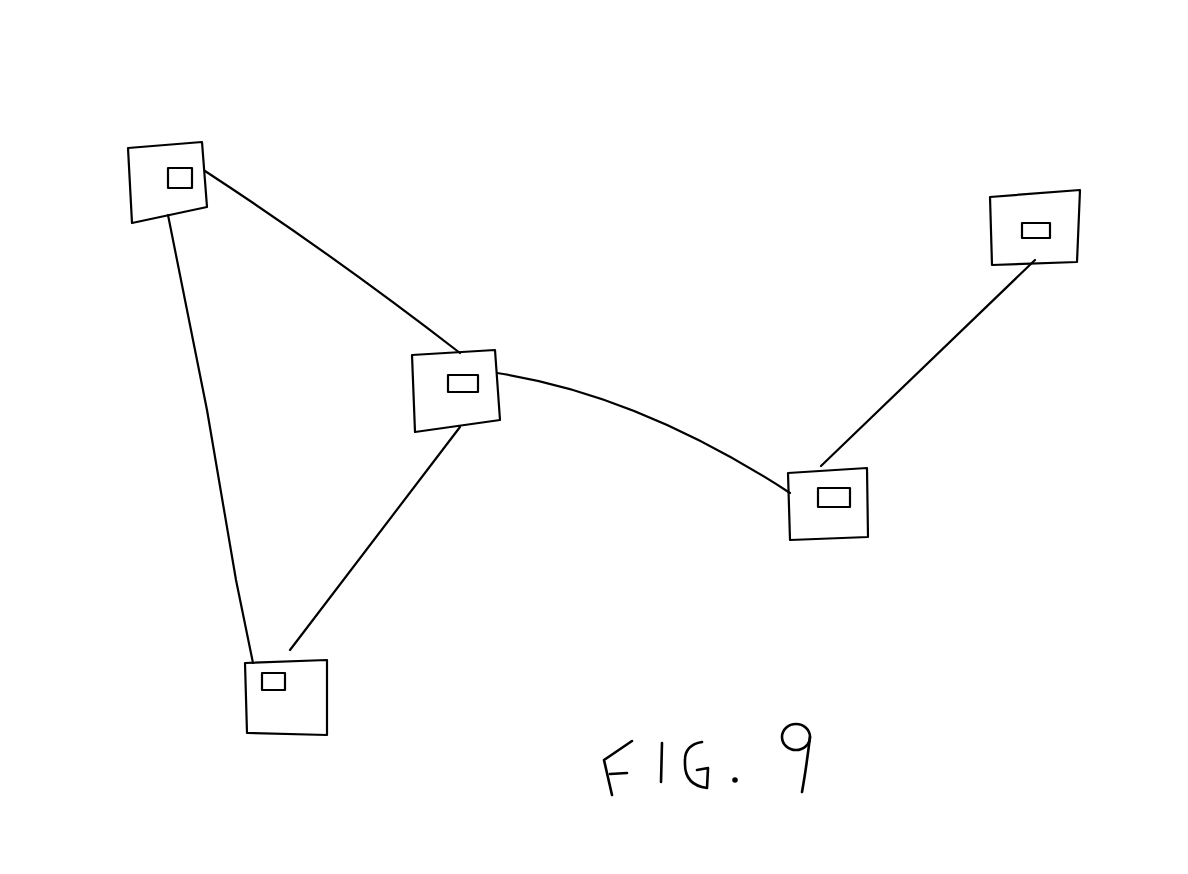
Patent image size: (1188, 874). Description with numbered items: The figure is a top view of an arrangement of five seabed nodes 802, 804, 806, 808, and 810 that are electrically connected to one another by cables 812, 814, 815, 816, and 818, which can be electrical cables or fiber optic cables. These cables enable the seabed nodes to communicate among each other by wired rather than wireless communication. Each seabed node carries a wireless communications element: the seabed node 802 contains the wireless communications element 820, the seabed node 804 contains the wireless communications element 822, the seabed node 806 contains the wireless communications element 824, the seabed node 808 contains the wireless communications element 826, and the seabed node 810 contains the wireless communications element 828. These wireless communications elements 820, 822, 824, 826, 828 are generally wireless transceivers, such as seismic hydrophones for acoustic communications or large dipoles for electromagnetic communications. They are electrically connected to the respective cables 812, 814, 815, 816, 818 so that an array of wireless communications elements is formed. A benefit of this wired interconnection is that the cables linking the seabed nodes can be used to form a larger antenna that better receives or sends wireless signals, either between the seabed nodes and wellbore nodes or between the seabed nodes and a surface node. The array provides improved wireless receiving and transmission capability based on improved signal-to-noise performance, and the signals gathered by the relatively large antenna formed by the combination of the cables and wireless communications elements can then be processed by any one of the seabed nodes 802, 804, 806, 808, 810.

The seabed node 802 is at (157, 153).
The seabed node 804 is at (273, 717).
The seabed node 806 is at (468, 362).
The seabed node 808 is at (840, 527).
The seabed node 810 is at (1040, 202).
The cable 812 is at (197, 373).
The cable 814 is at (335, 259).
The cable 815 is at (377, 538).
The cable 816 is at (608, 398).
The cable 818 is at (940, 367).
The wireless communications element 820 is at (197, 167).
The wireless communications element 822 is at (285, 680).
The wireless communications element 824 is at (468, 390).
The wireless communications element 826 is at (850, 492).
The wireless communications element 828 is at (1050, 230).